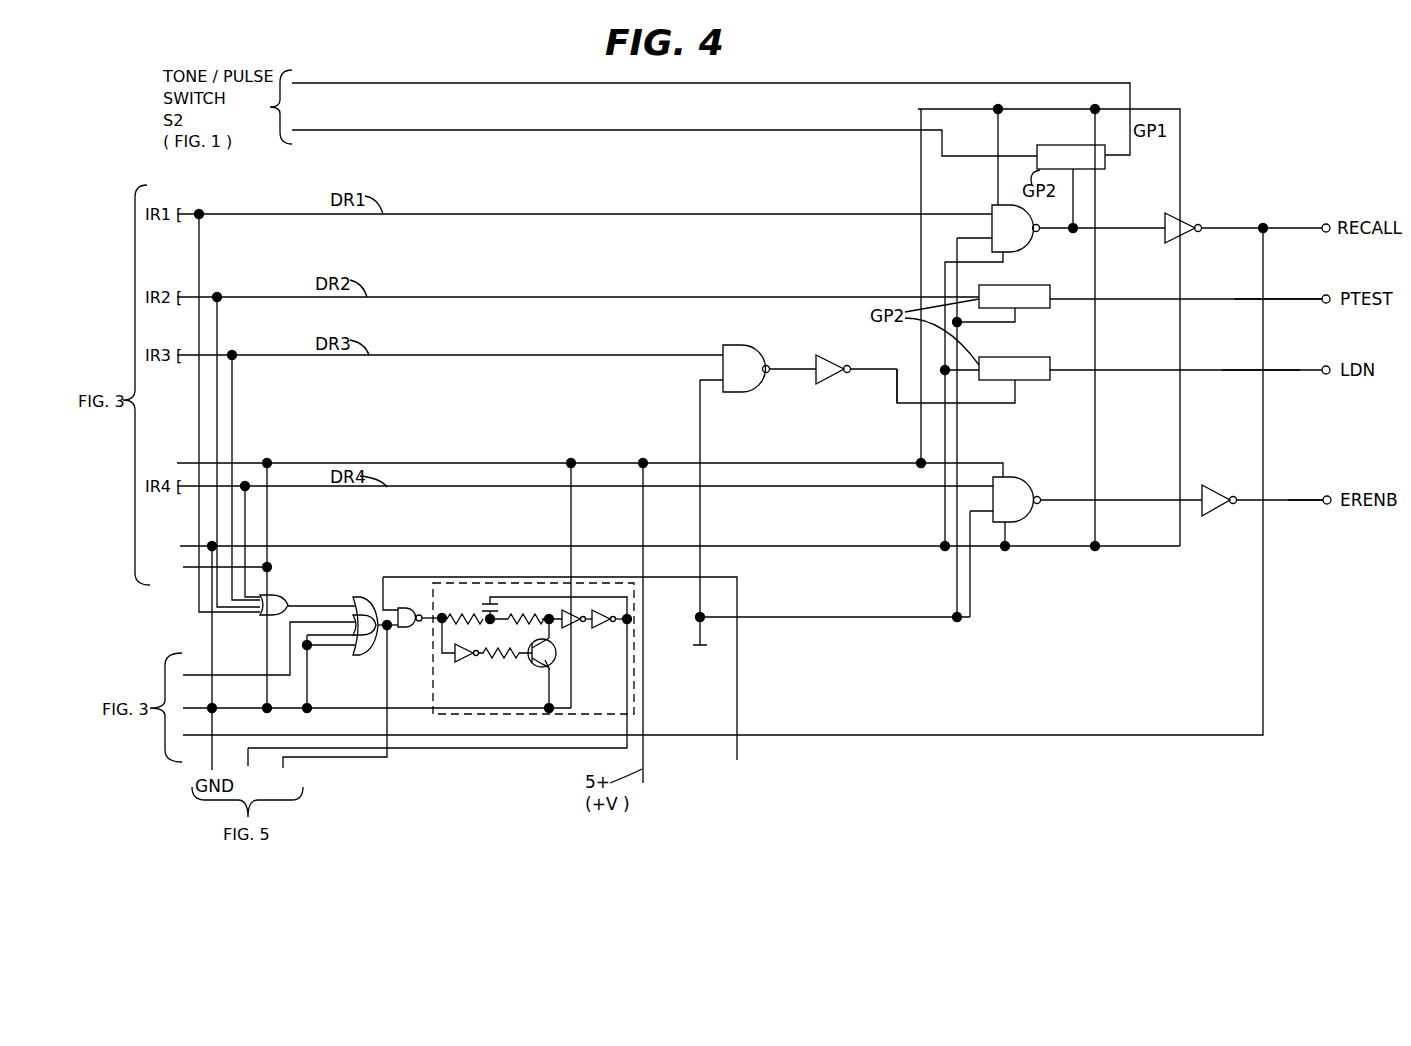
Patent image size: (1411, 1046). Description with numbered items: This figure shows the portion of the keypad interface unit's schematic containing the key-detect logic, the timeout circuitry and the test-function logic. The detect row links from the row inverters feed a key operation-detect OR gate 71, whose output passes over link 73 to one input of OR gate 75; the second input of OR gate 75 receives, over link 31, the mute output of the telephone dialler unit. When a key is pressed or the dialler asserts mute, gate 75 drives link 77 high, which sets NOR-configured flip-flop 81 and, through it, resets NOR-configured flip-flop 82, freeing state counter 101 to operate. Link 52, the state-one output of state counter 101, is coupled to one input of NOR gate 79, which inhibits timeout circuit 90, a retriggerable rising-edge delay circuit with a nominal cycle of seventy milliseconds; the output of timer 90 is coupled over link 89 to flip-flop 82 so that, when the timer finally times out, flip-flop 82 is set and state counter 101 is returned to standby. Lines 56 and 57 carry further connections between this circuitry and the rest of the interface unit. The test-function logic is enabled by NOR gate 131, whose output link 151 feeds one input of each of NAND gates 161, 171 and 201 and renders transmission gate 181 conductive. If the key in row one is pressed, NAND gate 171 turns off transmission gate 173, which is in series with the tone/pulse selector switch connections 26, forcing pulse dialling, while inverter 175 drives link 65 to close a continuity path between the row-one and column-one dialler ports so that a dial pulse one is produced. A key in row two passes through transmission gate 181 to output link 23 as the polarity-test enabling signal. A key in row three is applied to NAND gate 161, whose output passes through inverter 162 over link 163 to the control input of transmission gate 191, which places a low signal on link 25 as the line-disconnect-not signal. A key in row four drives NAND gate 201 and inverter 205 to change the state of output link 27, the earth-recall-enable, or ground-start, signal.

The tone/pulse switch lines 26 is at (422, 120).
The line 57 is at (503, 463).
The line 56 is at (487, 546).
The link 31 is at (197, 672).
The link 65 is at (195, 732).
The key operation-detect OR gate 71 is at (280, 592).
The link 73 is at (318, 606).
The OR gate 75 is at (365, 655).
The link 77 is at (393, 683).
The NOR gate 79 is at (407, 613).
The link 52 is at (382, 587).
The link 89 is at (462, 750).
The timeout circuit 90 is at (612, 713).
The link 151 is at (698, 640).
The NAND gate 161 is at (742, 352).
The inverter 162 is at (822, 365).
The link 163 is at (897, 385).
The NAND gate 171 is at (988, 205).
The transmission gate 173 is at (1057, 145).
The inverter 175 is at (1180, 216).
The transmission gate 181 is at (1038, 285).
The transmission gate 191 is at (1033, 357).
The NAND gate 201 is at (1018, 490).
The inverter 205 is at (1218, 485).
The output link 23 is at (1233, 299).
The link 25 is at (1222, 370).
The output link 27 is at (1288, 503).
The NOR-configured flip-flop 81 is at (286, 786).
The NOR-configured flip-flop 82 is at (251, 786).
The NOR gate 131 is at (708, 649).
The state counter 101 is at (750, 801).